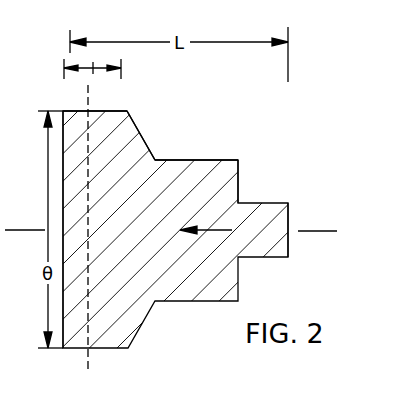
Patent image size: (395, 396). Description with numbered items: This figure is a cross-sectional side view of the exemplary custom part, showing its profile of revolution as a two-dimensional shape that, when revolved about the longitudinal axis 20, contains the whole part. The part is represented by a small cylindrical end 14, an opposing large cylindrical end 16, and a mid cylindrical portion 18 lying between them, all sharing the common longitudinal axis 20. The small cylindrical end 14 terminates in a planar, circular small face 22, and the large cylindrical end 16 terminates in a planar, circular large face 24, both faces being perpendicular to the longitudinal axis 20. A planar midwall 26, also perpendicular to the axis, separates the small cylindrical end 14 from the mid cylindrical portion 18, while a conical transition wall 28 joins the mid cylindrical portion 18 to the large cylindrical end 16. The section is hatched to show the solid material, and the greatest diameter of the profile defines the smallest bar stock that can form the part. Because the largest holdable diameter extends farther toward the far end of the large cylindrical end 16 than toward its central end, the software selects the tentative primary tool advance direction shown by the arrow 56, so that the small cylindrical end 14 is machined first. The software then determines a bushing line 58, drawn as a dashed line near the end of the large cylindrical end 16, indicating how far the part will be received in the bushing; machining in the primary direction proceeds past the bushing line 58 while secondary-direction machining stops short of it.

The small cylindrical end 14 is at (267, 257).
The large cylindrical end 16 is at (117, 110).
The transition wall 28 is at (139, 122).
The mid cylindrical portion 18 is at (173, 160).
The midwall 26 is at (240, 182).
The small face 22 is at (288, 228).
The arrow 56 is at (218, 228).
The longitudinal axis 20 is at (313, 231).
The large face 24 is at (63, 183).
The bushing line 58 is at (89, 349).